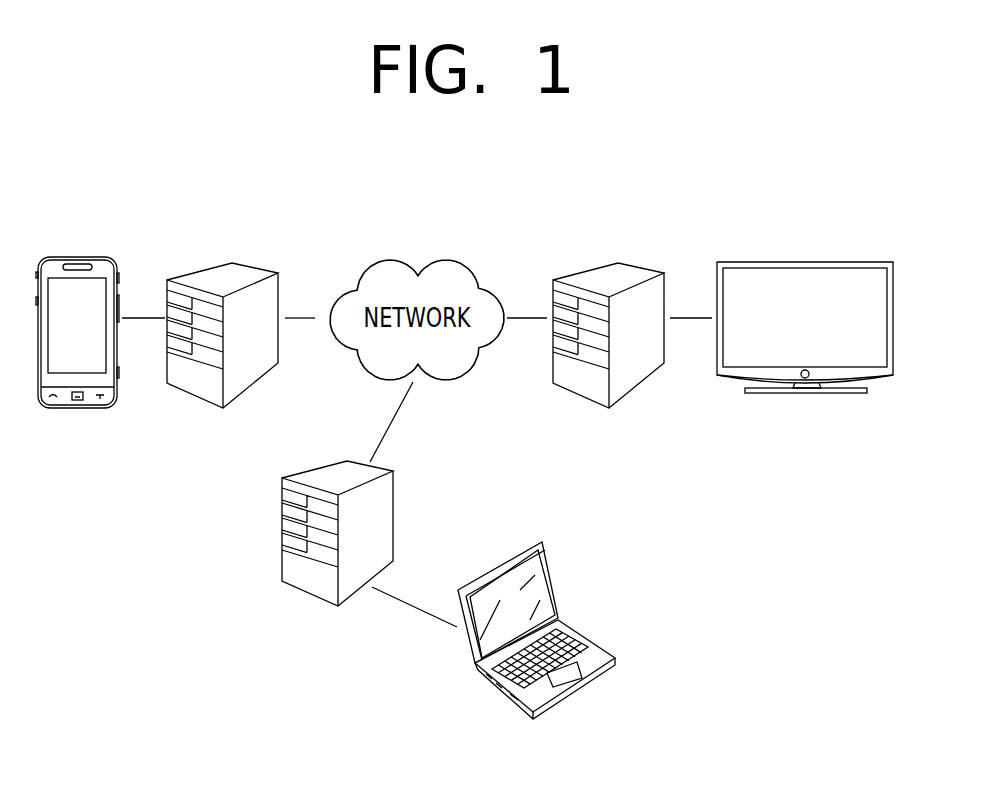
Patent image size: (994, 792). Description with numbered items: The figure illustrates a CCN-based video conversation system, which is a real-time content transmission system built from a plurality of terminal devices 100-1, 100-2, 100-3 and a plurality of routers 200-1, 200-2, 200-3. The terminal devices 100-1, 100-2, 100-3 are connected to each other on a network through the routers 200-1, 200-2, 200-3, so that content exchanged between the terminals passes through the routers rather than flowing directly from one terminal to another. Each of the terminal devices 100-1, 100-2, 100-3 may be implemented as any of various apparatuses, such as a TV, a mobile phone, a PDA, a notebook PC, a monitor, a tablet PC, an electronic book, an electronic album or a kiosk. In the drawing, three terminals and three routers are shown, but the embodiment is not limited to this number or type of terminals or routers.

The terminal device 100-1 is at (75, 256).
The terminal device 100-2 is at (804, 262).
The terminal device 100-3 is at (497, 565).
The router 200-1 is at (197, 268).
The router 200-2 is at (584, 270).
The router 200-3 is at (311, 468).